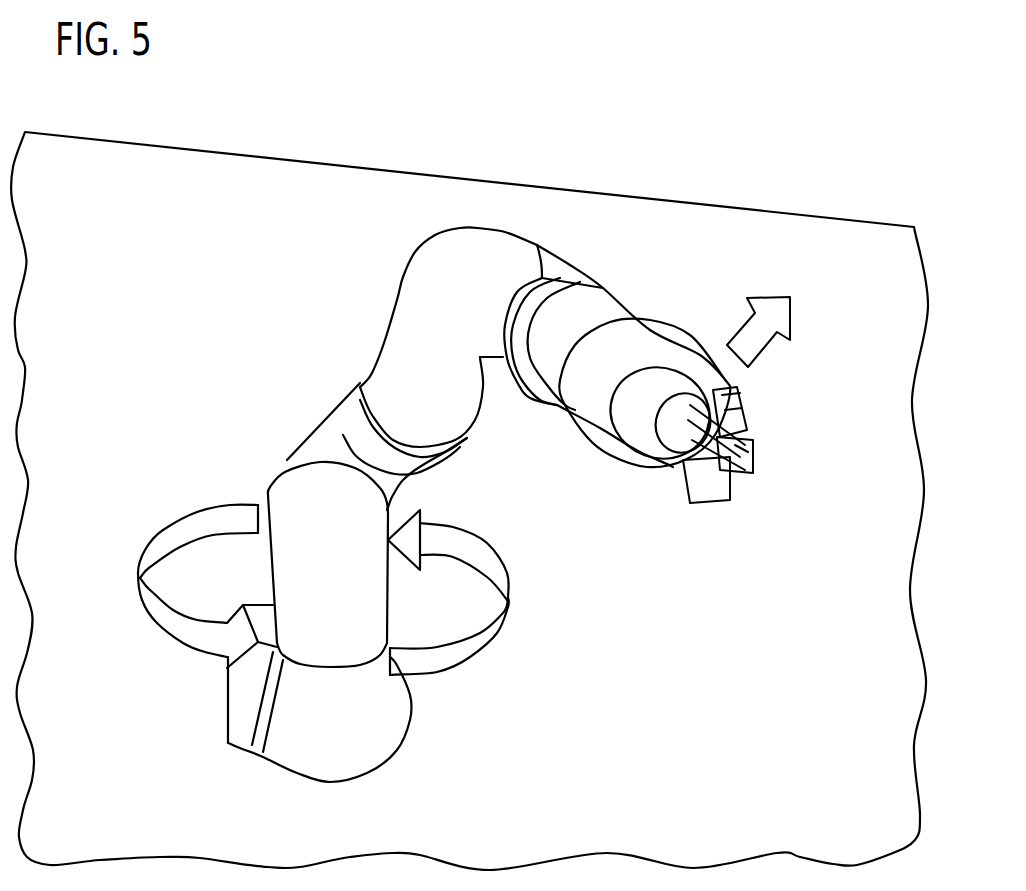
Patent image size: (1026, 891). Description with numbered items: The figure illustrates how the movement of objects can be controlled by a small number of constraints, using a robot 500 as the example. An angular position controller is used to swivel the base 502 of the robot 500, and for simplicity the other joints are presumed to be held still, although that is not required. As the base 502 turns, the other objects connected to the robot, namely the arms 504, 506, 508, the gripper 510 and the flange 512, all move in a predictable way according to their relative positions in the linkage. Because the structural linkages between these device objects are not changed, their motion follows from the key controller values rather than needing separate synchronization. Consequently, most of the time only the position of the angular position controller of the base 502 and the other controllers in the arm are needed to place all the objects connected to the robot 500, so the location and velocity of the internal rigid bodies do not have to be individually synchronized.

The robot 500 is at (360, 373).
The base 502 is at (243, 720).
The arm 504 is at (592, 307).
The arm 506 is at (415, 320).
The arm 508 is at (273, 577).
The gripper 510 is at (688, 483).
The flange 512 is at (638, 438).